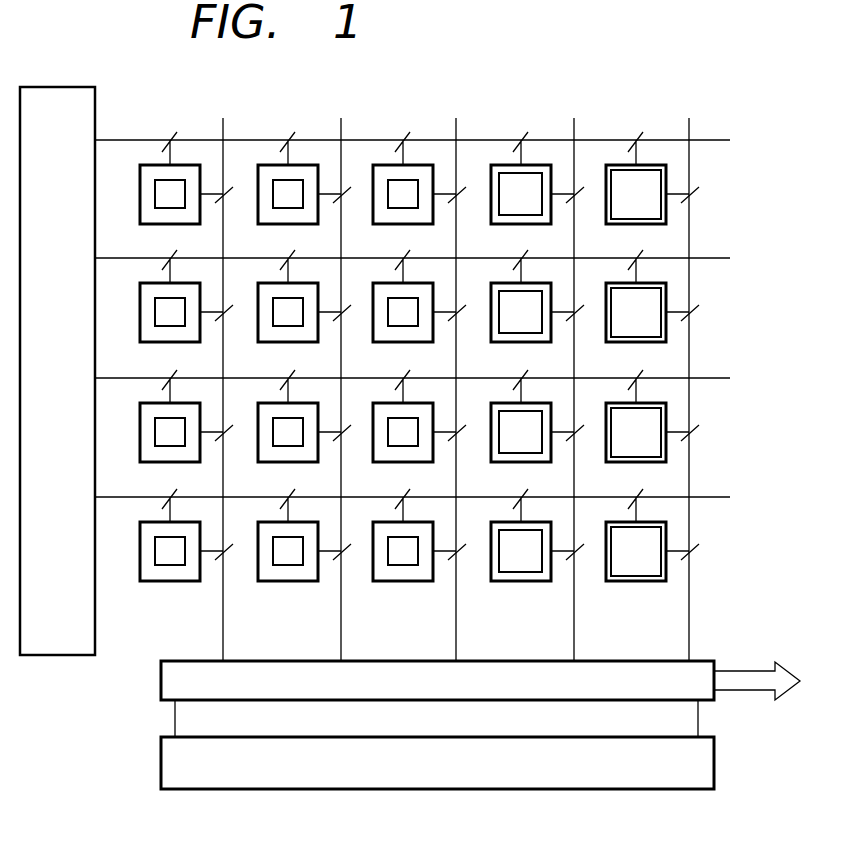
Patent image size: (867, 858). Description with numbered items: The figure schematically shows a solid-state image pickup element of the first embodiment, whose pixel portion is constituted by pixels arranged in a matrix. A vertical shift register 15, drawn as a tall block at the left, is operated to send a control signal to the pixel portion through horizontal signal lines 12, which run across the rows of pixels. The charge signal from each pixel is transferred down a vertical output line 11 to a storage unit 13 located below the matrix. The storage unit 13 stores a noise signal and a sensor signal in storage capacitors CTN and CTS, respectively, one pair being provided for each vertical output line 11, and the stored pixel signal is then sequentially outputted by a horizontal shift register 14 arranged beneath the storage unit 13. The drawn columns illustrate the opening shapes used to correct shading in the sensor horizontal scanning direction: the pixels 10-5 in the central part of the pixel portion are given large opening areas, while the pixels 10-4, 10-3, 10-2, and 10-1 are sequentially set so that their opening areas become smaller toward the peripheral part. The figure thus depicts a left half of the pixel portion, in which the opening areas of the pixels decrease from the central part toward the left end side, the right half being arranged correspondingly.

The pixel 10-1 is at (173, 190).
The pixel 10-2 is at (290, 190).
The pixel 10-3 is at (406, 190).
The pixel 10-4 is at (525, 190).
The pixel 10-5 is at (642, 190).
The vertical output line 11 is at (690, 342).
The horizontal signal line 12 is at (712, 497).
The storage unit 13 is at (161, 678).
The horizontal shift register 14 is at (161, 755).
The vertical shift register 15 is at (67, 87).